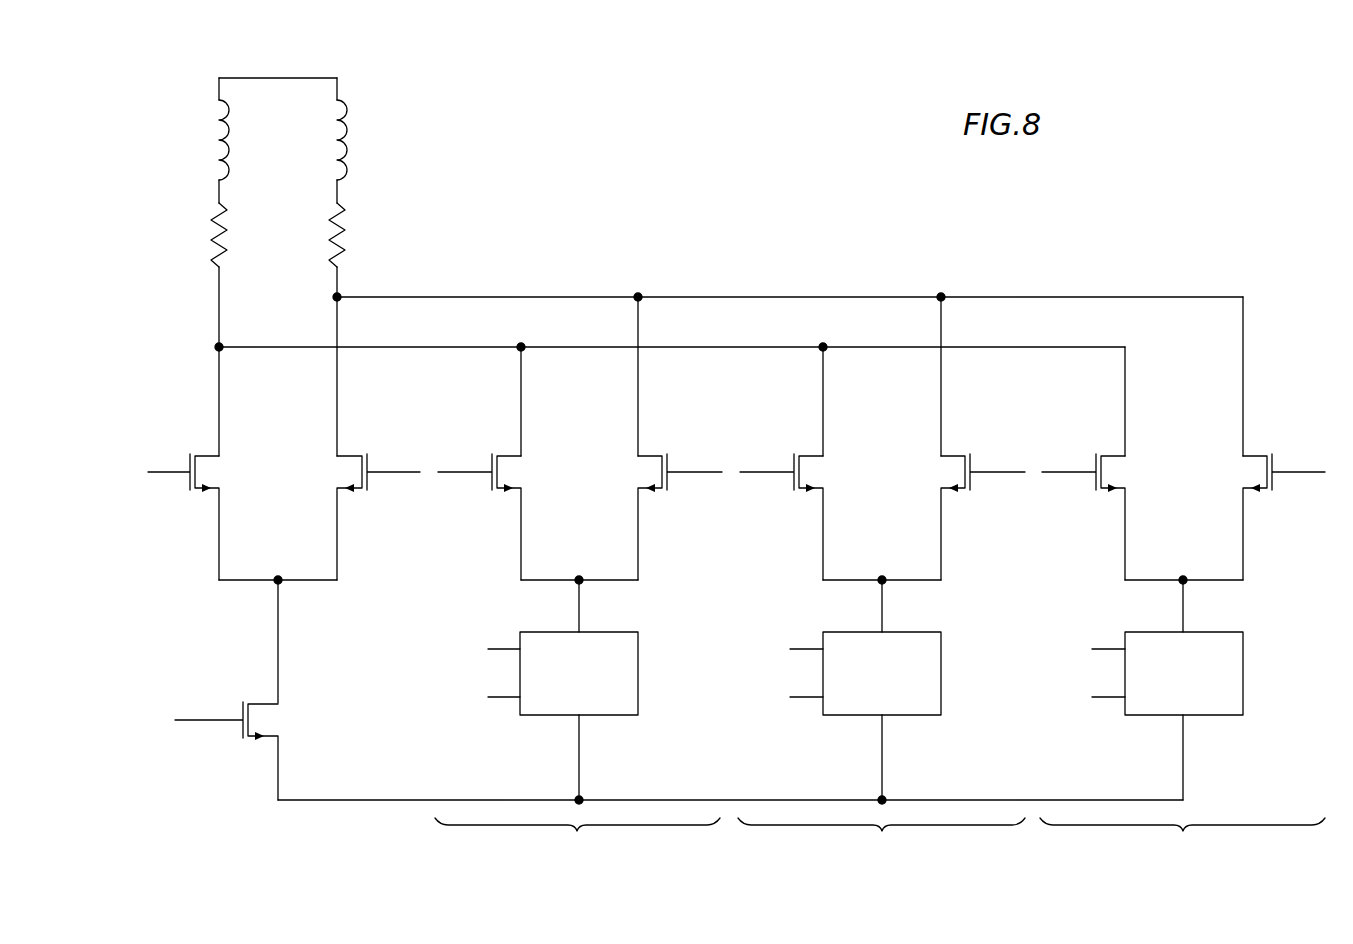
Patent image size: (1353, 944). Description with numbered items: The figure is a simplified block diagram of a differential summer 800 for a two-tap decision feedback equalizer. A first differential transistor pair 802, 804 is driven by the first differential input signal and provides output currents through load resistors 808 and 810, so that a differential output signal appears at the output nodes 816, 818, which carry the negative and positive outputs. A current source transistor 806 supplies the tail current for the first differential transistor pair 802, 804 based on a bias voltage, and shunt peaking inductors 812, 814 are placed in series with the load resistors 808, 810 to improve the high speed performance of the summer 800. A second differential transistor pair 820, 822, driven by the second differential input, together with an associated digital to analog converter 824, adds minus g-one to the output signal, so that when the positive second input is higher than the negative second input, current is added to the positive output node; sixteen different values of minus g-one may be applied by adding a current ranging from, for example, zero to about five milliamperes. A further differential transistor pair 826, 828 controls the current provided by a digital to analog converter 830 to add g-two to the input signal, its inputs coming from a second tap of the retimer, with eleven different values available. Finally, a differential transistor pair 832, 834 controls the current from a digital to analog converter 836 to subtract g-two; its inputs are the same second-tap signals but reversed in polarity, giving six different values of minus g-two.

The summer 800 is at (747, 192).
The first differential transistor pair transistor 802 is at (220, 468).
The first differential transistor pair transistor 804 is at (336, 480).
The current source transistor 806 is at (280, 710).
The load resistor 808 is at (224, 212).
The load resistor 810 is at (342, 212).
The shunt peaking inductor 812 is at (229, 131).
The shunt peaking inductor 814 is at (341, 108).
The output node 816 is at (460, 347).
The output node 818 is at (460, 297).
The second differential transistor pair transistor 820 is at (522, 468).
The second differential transistor pair transistor 822 is at (637, 480).
The digital to analog converter 824 is at (552, 715).
The differential transistor pair transistor 826 is at (824, 468).
The differential transistor pair transistor 828 is at (940, 480).
The digital to analog converter 830 is at (855, 715).
The differential transistor pair transistor 832 is at (1126, 468).
The differential transistor pair transistor 834 is at (1242, 480).
The digital to analog converter 836 is at (1159, 715).